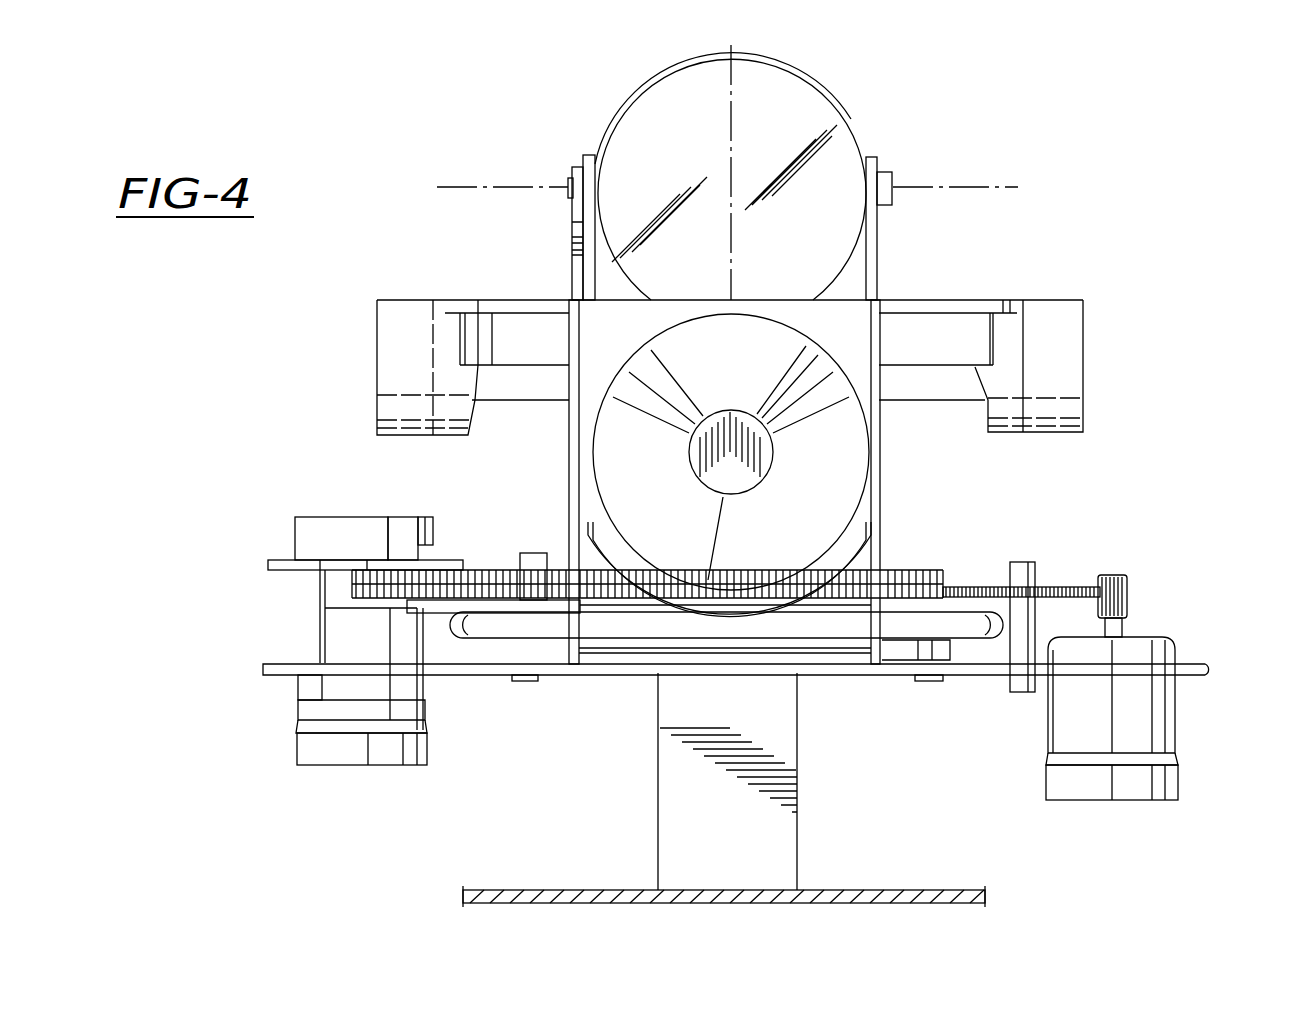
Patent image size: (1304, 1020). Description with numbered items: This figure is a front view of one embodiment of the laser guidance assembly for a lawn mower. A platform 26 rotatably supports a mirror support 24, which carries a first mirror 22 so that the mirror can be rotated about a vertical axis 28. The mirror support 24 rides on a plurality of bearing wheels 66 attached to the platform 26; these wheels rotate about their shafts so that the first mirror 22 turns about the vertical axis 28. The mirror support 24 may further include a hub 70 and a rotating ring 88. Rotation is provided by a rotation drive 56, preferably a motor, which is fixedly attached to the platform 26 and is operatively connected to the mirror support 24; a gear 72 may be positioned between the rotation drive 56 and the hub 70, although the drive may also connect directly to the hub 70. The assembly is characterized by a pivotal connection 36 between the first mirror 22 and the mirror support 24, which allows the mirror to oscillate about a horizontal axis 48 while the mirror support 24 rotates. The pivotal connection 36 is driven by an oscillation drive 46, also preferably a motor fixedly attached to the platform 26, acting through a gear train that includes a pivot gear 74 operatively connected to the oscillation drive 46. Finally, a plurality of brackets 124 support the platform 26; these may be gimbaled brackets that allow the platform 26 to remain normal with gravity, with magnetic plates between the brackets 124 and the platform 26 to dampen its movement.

The first mirror 22 is at (824, 113).
The mirror support 24 is at (878, 162).
The platform 26 is at (992, 302).
The vertical axis 28 is at (733, 127).
The pivotal connection 36 is at (893, 197).
The oscillation drive 46 is at (340, 708).
The horizontal axis 48 is at (477, 187).
The rotation drive 56 is at (1172, 715).
The bearing wheels 66 is at (898, 626).
The hub 70 is at (643, 594).
The gear 72 is at (1070, 588).
The pivot gear 74 is at (285, 558).
The rotating ring 88 is at (932, 572).
The brackets 124 is at (387, 313).